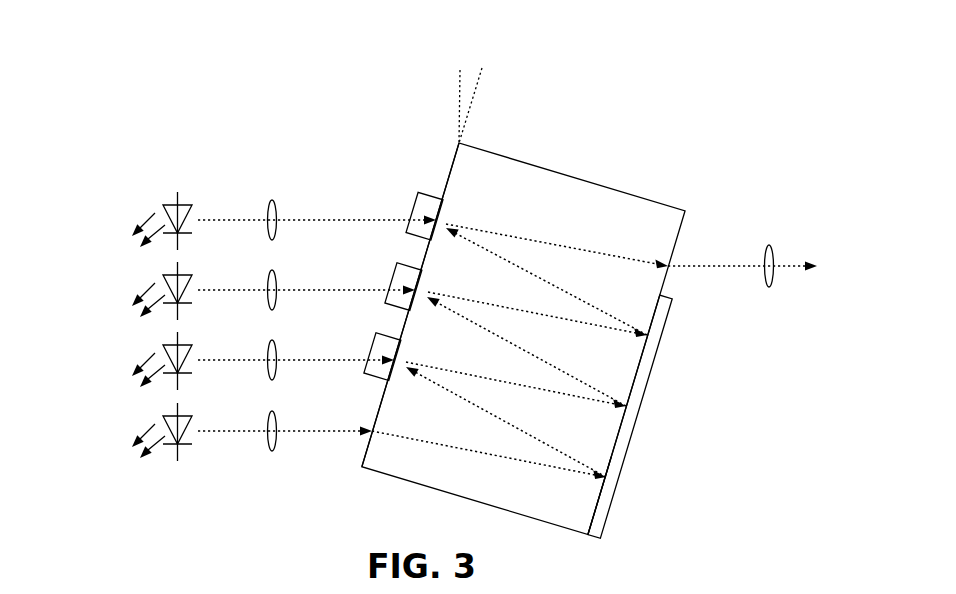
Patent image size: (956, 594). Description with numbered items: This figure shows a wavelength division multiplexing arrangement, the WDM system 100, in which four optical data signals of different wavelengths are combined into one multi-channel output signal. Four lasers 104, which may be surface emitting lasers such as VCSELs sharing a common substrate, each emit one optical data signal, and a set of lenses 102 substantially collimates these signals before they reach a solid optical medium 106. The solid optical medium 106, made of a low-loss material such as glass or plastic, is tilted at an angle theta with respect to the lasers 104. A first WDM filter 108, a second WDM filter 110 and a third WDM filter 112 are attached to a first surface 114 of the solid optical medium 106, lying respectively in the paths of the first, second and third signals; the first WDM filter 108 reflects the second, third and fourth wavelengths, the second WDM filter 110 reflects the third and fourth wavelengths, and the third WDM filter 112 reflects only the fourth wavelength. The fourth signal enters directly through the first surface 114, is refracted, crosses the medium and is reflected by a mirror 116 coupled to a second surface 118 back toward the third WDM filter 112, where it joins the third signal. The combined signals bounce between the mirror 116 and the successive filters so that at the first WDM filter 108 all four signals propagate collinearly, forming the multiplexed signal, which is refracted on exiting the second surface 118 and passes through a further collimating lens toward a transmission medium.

The WDM system 100 is at (163, 95).
The lenses 102 is at (275, 200).
The lasers 104 is at (169, 203).
The solid optical medium 106 is at (563, 174).
The first WDM filter 108 is at (431, 195).
The second WDM filter 110 is at (405, 265).
The third WDM filter 112 is at (384, 336).
The first surface 114 is at (454, 160).
The mirror 116 is at (650, 378).
The second surface 118 is at (592, 520).